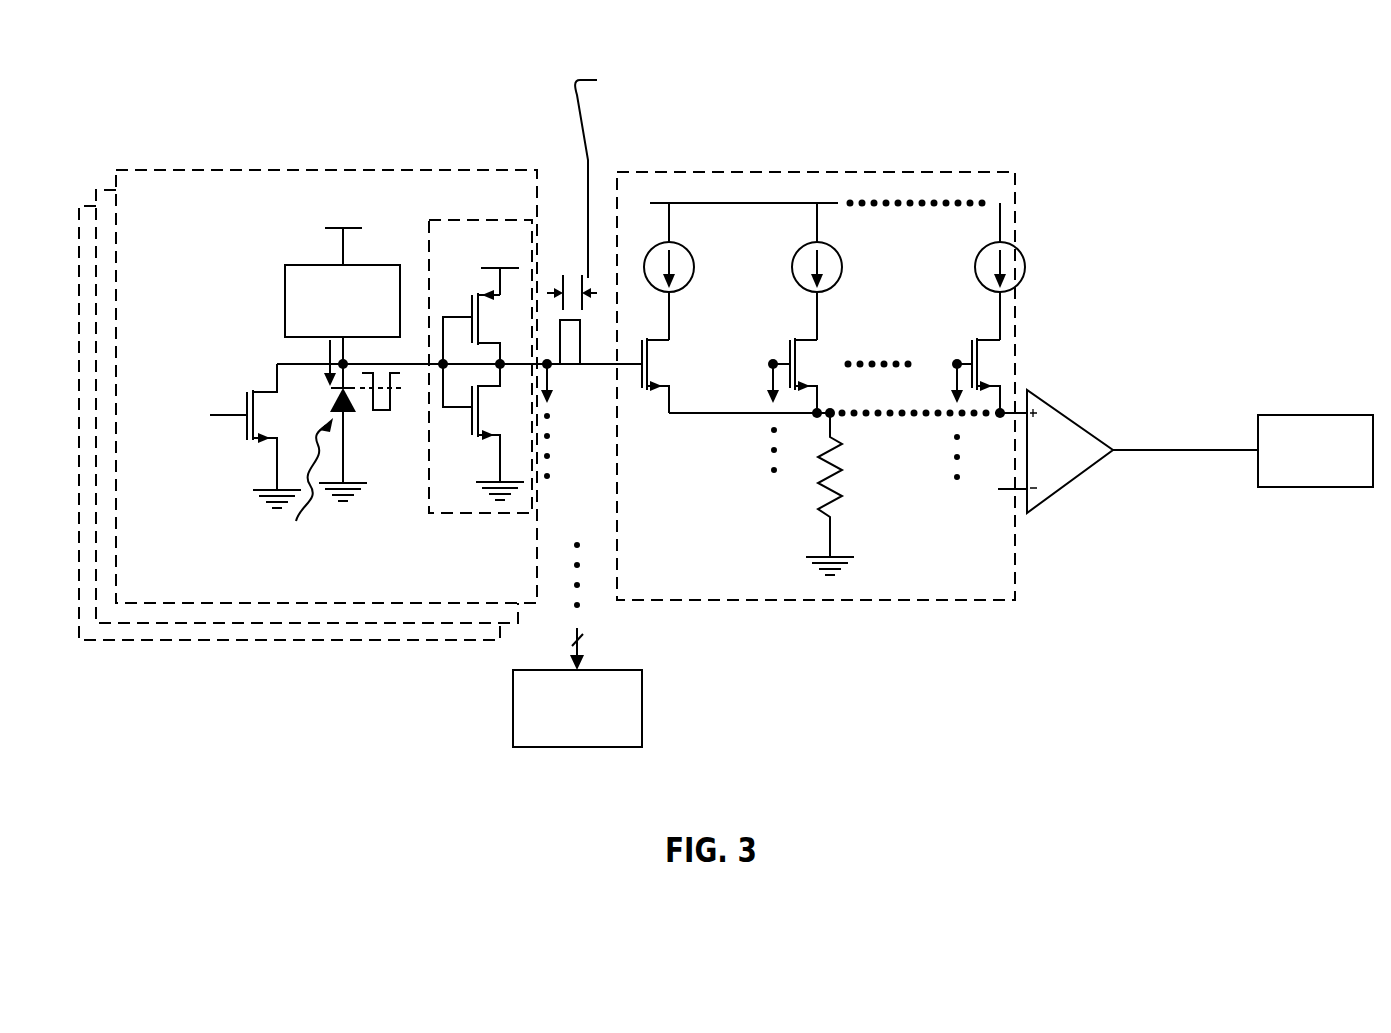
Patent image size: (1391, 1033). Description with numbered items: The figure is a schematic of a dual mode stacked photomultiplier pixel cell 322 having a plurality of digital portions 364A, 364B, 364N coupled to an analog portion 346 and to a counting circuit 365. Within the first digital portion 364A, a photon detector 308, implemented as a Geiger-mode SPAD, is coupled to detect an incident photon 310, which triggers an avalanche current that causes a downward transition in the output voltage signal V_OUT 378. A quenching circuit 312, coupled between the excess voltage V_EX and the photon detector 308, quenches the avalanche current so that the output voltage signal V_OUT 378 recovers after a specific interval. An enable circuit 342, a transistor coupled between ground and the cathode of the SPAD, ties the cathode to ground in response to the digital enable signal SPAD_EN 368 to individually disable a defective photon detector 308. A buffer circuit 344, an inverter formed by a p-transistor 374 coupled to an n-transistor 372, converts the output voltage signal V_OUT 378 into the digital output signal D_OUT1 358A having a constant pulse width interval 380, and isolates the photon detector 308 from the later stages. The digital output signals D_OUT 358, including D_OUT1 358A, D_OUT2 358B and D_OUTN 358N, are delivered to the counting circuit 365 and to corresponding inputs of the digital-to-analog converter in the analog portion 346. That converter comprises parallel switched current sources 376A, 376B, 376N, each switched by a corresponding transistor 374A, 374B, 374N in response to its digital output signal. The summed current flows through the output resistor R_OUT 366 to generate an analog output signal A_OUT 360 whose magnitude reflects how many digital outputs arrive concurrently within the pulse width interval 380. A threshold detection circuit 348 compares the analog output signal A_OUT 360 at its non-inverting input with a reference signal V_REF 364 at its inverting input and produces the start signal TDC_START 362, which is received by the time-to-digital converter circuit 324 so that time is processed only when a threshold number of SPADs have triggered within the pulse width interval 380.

The photomultiplier pixel cell 322 is at (1233, 63).
The first digital portion 364A is at (118, 170).
The digital portion 364B is at (98, 190).
The digital portion 364N is at (80, 206).
The digital enable signal SPAD_EN 368 is at (180, 398).
The enable circuit 342 is at (254, 390).
The quenching circuit 312 is at (285, 318).
The photon detector 308 is at (328, 395).
The incident photon 310 is at (272, 540).
The output voltage signal V_OUT 378 is at (382, 412).
The buffer circuit 344 is at (480, 393).
The p-transistor 374 is at (476, 297).
The n-transistor 372 is at (456, 412).
The pulse width interval 380 is at (636, 70).
The digital output signal D_OUT1 358A is at (554, 400).
The digital output signal D_OUT2 358B is at (757, 363).
The digital output signal D_OUTN 358N is at (944, 363).
The digital output signal D_OUT 358 is at (570, 628).
The counting circuit 365 is at (643, 685).
The analog portion 346 is at (1015, 600).
The switched current source 376A is at (688, 253).
The switched current source 376B is at (840, 253).
The switched current source 376N is at (977, 252).
The transistor 374A is at (669, 355).
The transistor 374B is at (809, 361).
The transistor 374N is at (972, 345).
The output resistor R_OUT 366 is at (810, 490).
The analog output signal A_OUT 360 is at (953, 433).
The reference signal V_REF 364 is at (956, 482).
The threshold detection circuit 348 is at (1072, 410).
The start signal TDC_START 362 is at (1171, 413).
The time-to-digital converter circuit 324 is at (1305, 415).